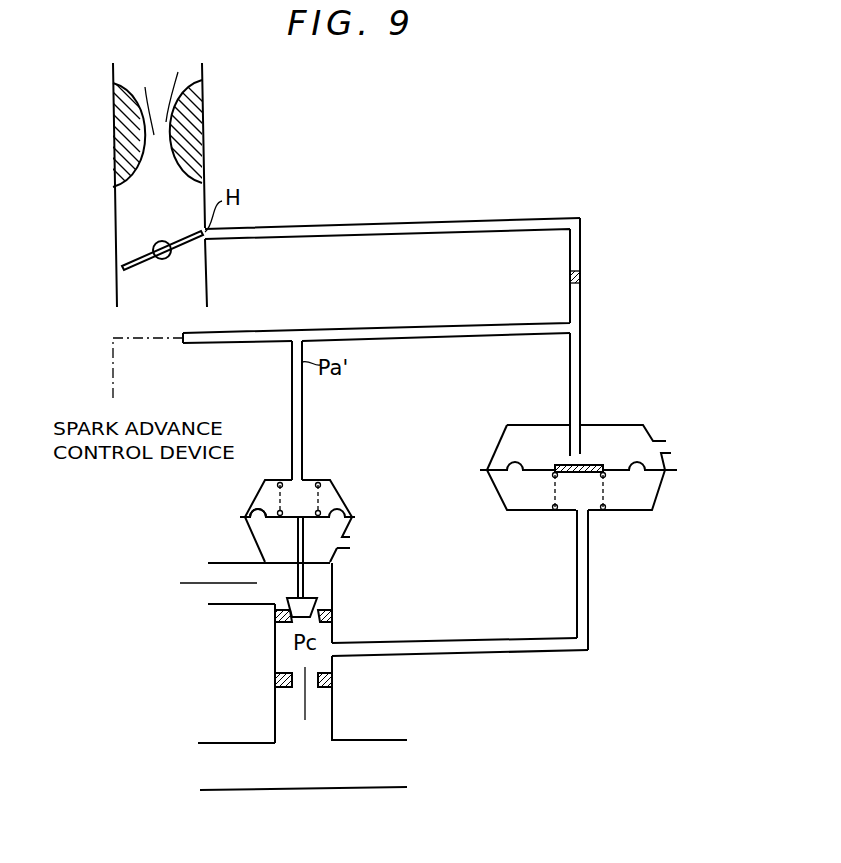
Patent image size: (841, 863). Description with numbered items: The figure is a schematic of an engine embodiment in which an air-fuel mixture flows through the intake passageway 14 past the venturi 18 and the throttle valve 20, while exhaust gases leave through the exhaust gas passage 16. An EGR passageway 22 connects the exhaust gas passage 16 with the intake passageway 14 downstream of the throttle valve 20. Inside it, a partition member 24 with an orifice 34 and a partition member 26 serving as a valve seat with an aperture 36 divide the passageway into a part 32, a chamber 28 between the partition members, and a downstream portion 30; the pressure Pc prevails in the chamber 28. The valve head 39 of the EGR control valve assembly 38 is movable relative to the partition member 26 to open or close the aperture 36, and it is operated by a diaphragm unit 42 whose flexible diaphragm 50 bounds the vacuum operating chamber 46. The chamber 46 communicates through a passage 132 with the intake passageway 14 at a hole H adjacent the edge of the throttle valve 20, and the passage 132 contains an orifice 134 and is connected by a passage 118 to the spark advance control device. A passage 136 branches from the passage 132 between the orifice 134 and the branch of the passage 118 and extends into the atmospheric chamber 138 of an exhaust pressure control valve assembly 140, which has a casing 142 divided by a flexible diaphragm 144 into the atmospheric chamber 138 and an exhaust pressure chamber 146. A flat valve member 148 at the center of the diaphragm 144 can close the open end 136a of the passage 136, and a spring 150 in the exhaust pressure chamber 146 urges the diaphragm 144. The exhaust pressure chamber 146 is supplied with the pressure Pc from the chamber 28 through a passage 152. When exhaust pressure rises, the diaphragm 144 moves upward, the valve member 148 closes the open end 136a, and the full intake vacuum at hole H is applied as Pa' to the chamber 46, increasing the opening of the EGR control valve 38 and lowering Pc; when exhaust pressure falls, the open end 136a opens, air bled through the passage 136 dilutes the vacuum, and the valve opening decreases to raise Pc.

The intake passageway 14 is at (172, 300).
The exhaust gas passage 16 is at (243, 793).
The venturi 18 is at (148, 152).
The throttle valve 20 is at (190, 247).
The EGR passageway 22 is at (341, 632).
The partition member 24 is at (327, 688).
The partition member 26 is at (333, 616).
The chamber 28 is at (290, 652).
The downstream portion 30 is at (227, 592).
The part of upstream portion 32 is at (295, 710).
The orifice 34 is at (295, 690).
The aperture 36 is at (293, 622).
The EGR control valve assembly 38 is at (343, 576).
The valve head 39 is at (317, 605).
The diaphragm unit 42 is at (340, 475).
The first vacuum operating chamber 46 is at (328, 502).
The flexible diaphragm 50 is at (262, 516).
The passage 118 is at (242, 344).
The passage 132 is at (393, 236).
The orifice 134 is at (582, 278).
The passage 136 is at (581, 355).
The open end 136a is at (568, 460).
The atmospheric chamber 138 is at (605, 433).
The exhaust pressure control valve assembly 140 is at (656, 420).
The casing 142 is at (493, 498).
The flexible diaphragm 144 is at (642, 463).
The exhaust pressure chamber 146 is at (627, 495).
The flat valve member 148 is at (553, 462).
The spring 150 is at (550, 495).
The passage 152 is at (503, 647).